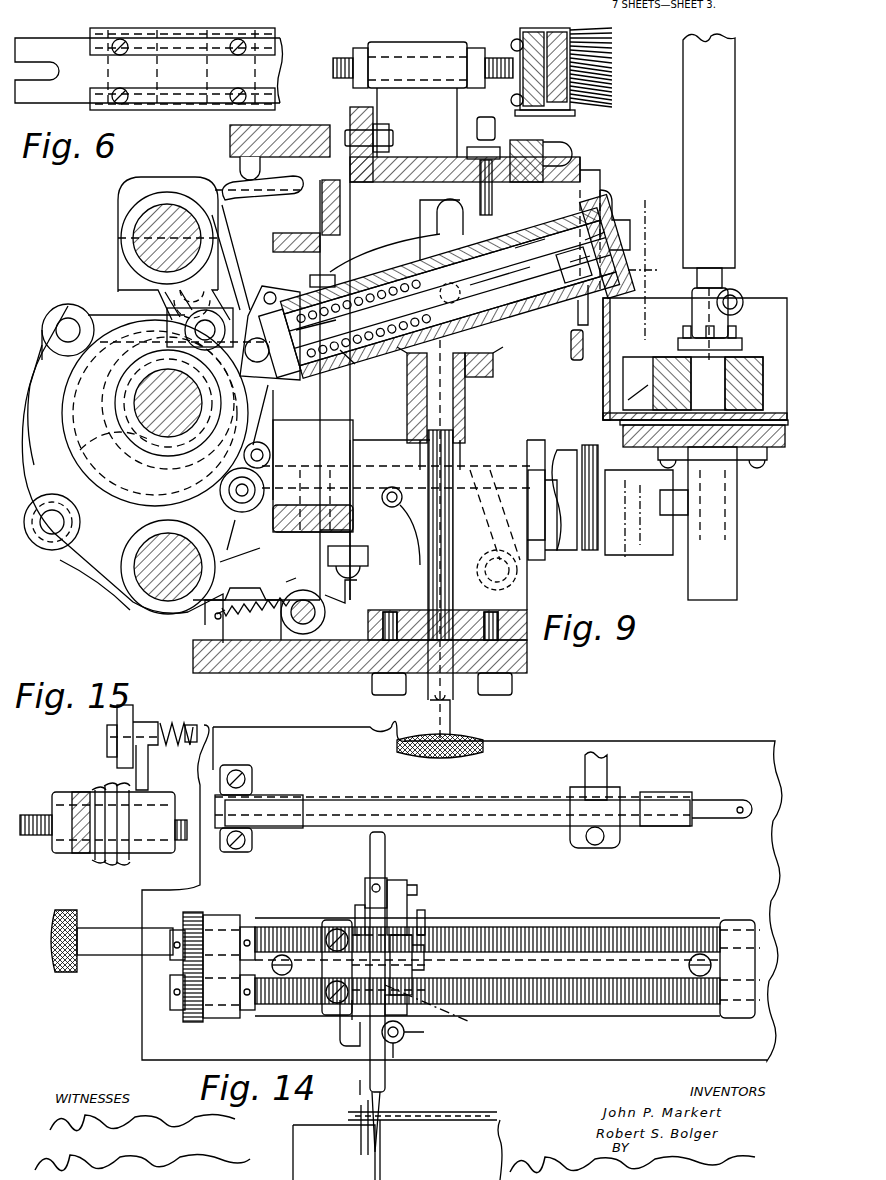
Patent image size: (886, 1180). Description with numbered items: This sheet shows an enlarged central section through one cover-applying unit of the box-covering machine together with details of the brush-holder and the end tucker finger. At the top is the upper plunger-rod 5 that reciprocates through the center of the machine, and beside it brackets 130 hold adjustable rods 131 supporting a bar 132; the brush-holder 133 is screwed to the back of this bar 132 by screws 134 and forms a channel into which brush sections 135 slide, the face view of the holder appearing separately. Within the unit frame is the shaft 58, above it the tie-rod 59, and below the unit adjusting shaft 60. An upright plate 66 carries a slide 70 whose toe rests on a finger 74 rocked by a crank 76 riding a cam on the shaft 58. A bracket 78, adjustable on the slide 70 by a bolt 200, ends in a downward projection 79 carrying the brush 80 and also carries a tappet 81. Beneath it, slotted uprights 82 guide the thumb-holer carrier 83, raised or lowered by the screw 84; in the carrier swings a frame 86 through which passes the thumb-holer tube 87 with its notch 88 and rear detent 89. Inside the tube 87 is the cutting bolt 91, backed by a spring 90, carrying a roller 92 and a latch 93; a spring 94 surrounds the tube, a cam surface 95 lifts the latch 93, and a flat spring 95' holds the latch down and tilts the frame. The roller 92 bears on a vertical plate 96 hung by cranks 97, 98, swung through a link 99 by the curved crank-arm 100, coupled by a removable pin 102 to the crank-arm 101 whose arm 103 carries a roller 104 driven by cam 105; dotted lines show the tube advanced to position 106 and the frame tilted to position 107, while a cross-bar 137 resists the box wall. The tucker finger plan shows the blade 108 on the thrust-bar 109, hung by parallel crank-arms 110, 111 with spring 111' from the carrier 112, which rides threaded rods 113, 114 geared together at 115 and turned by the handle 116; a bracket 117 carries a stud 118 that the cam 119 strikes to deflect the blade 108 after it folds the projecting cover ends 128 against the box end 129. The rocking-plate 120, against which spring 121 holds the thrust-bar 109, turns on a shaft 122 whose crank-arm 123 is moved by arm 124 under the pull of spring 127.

In FIG. 9, the upper plunger-rod 5 is at (735, 127).
In FIG. 9, the shaft 58 is at (140, 410).
In FIG. 9, the tie-rod 59 is at (150, 234).
In FIG. 9, the unit adjusting shaft 60 is at (172, 585).
In FIG. 9, the upright plate 66 is at (296, 252).
In FIG. 9, the slide 70 is at (325, 390).
In FIG. 9, the finger 74 is at (290, 192).
In FIG. 9, the crank 76 is at (226, 262).
In FIG. 9, the bracket 78 is at (398, 170).
In FIG. 9, the downward projection 79 is at (598, 244).
In FIG. 9, the brush or wiper 80 is at (572, 330).
In FIG. 9, the tappet 81 is at (496, 166).
In FIG. 9, the slotted uprights 82 is at (440, 229).
In FIG. 9, the thumb-holer carrier 83 is at (475, 378).
In FIG. 9, the screw 84 is at (458, 706).
In FIG. 9, the frame 86 is at (520, 250).
In FIG. 9, the thumb-holer tube 87 is at (541, 176).
In FIG. 9, the transverse semicircular notch 88 is at (585, 266).
In FIG. 9, the detent 89 is at (315, 271).
In FIG. 9, the spring 90 is at (310, 365).
In FIG. 9, the bolt 91 is at (500, 282).
In FIG. 9, the roller 92 is at (260, 442).
In FIG. 9, the latch 93 is at (275, 292).
In FIG. 9, the spring 94 is at (376, 352).
In FIG. 9, the cam surface 95 is at (444, 295).
In FIG. 9, the flat spring 95' is at (385, 247).
In FIG. 9, the vertical plate 96 is at (226, 304).
In FIG. 9, the crank 97 is at (165, 292).
In FIG. 9, the crank 98 is at (176, 470).
In FIG. 9, the link 99 is at (100, 322).
In FIG. 9, the curved crank-arm 100 is at (87, 450).
In FIG. 9, the crank-arm 101 is at (102, 566).
In FIG. 9, the removable pin 102 is at (50, 540).
In FIG. 9, the arm 103 is at (220, 545).
In FIG. 9, the roller 104 is at (262, 508).
In FIG. 9, the cam 105 is at (70, 400).
In FIG. 9, the forward tube position 106 is at (620, 235).
In FIG. 9, the tilted position 107 is at (662, 280).
In FIG. 9, the tucker blade 108 is at (612, 502).
In FIG. 14, the tucker blade 108 is at (386, 1078).
In FIG. 14, the thrust-bar 109 is at (386, 846).
In FIG. 15, the crank-arm 110 is at (150, 766).
In FIG. 14, the crank-arm 110 is at (406, 905).
In FIG. 14, the crank-arm 111 is at (424, 965).
In FIG. 15, the spring 111' is at (183, 715).
In FIG. 14, the spring 111' is at (466, 903).
In FIG. 15, the carrier 112 is at (60, 850).
In FIG. 14, the carrier 112 is at (406, 1022).
In FIG. 14, the threaded rod 113 is at (615, 1006).
In FIG. 14, the threaded rod 114 is at (598, 928).
In FIG. 14, the gearing 115 is at (195, 912).
In FIG. 14, the handle 116 is at (130, 950).
In FIG. 14, the bracket 117 is at (340, 1028).
In FIG. 9, the stud 118 is at (542, 472).
In FIG. 14, the stud 118 is at (403, 1040).
In FIG. 14, the cam 119 is at (470, 1022).
In FIG. 9, the rocking-plate 120 is at (330, 480).
In FIG. 14, the rocking-plate 120 is at (330, 812).
In FIG. 15, the spring 121 is at (106, 865).
In FIG. 14, the spring 121 is at (340, 952).
In FIG. 9, the shaft 122 is at (265, 616).
In FIG. 14, the shaft 122 is at (703, 798).
In FIG. 9, the crank-arm 123 is at (333, 614).
In FIG. 14, the crank-arm 123 is at (617, 840).
In FIG. 9, the arm 124 is at (348, 562).
In FIG. 14, the arm 124 is at (608, 770).
In FIG. 9, the spring 127 is at (225, 615).
In FIG. 14, the projecting ends of the cover 128 is at (358, 1118).
In FIG. 14, the end of the box 129 is at (382, 1160).
In FIG. 9, the bracket 130 is at (432, 54).
In FIG. 9, the adjustable rod 131 is at (495, 58).
In FIG. 6, the bar 132 is at (149, 70).
In FIG. 9, the bar 132 is at (575, 36).
In FIG. 6, the brush-holder 133 is at (204, 50).
In FIG. 9, the brush-holder 133 is at (578, 112).
In FIG. 6, the screw 134 is at (114, 55).
In FIG. 9, the screw 134 is at (511, 100).
In FIG. 9, the brush section 135 is at (606, 73).
In FIG. 9, the cross-bar 137 is at (576, 362).
In FIG. 9, the bolt 200 is at (393, 137).